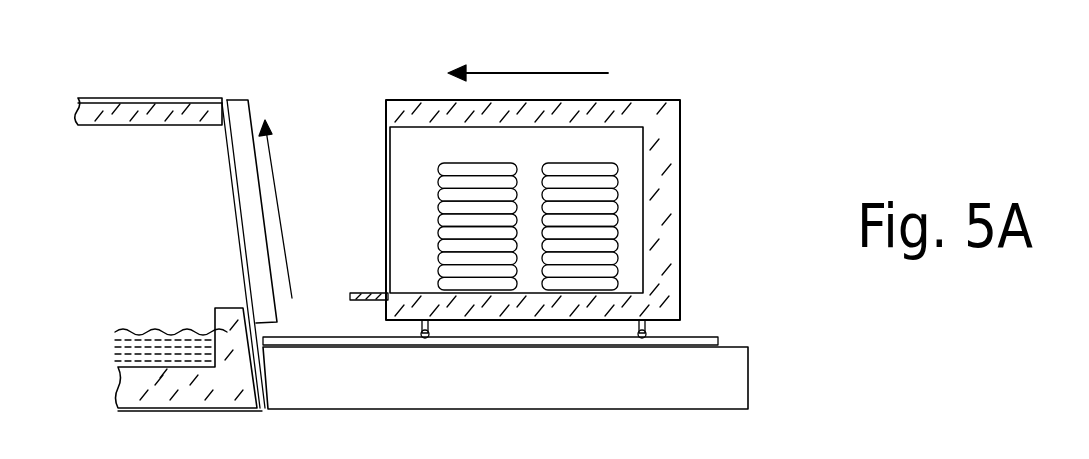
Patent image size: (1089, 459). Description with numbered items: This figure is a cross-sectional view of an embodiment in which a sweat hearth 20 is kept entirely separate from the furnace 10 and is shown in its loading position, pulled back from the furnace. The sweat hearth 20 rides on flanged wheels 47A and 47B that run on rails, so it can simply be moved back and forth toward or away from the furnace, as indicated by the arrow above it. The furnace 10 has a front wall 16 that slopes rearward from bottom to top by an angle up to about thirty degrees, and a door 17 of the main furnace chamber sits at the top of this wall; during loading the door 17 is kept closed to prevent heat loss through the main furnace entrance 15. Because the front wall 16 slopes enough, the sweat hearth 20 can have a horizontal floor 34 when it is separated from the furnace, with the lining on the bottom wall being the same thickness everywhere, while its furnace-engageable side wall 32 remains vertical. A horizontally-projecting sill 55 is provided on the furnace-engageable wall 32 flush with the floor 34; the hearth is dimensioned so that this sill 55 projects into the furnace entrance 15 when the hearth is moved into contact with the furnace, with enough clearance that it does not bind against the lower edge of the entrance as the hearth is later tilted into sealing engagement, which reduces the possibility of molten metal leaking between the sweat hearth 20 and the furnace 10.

The furnace 10 is at (128, 76).
The main furnace entrance 15 is at (192, 193).
The front wall 16 is at (262, 326).
The door 17 is at (232, 103).
The sweat hearth 20 is at (557, 187).
The furnace-engageable side wall 32 is at (388, 118).
The floor 34 is at (630, 292).
The sill 55 is at (373, 293).
The flanged wheel 47A is at (423, 339).
The flanged wheel 47B is at (640, 339).